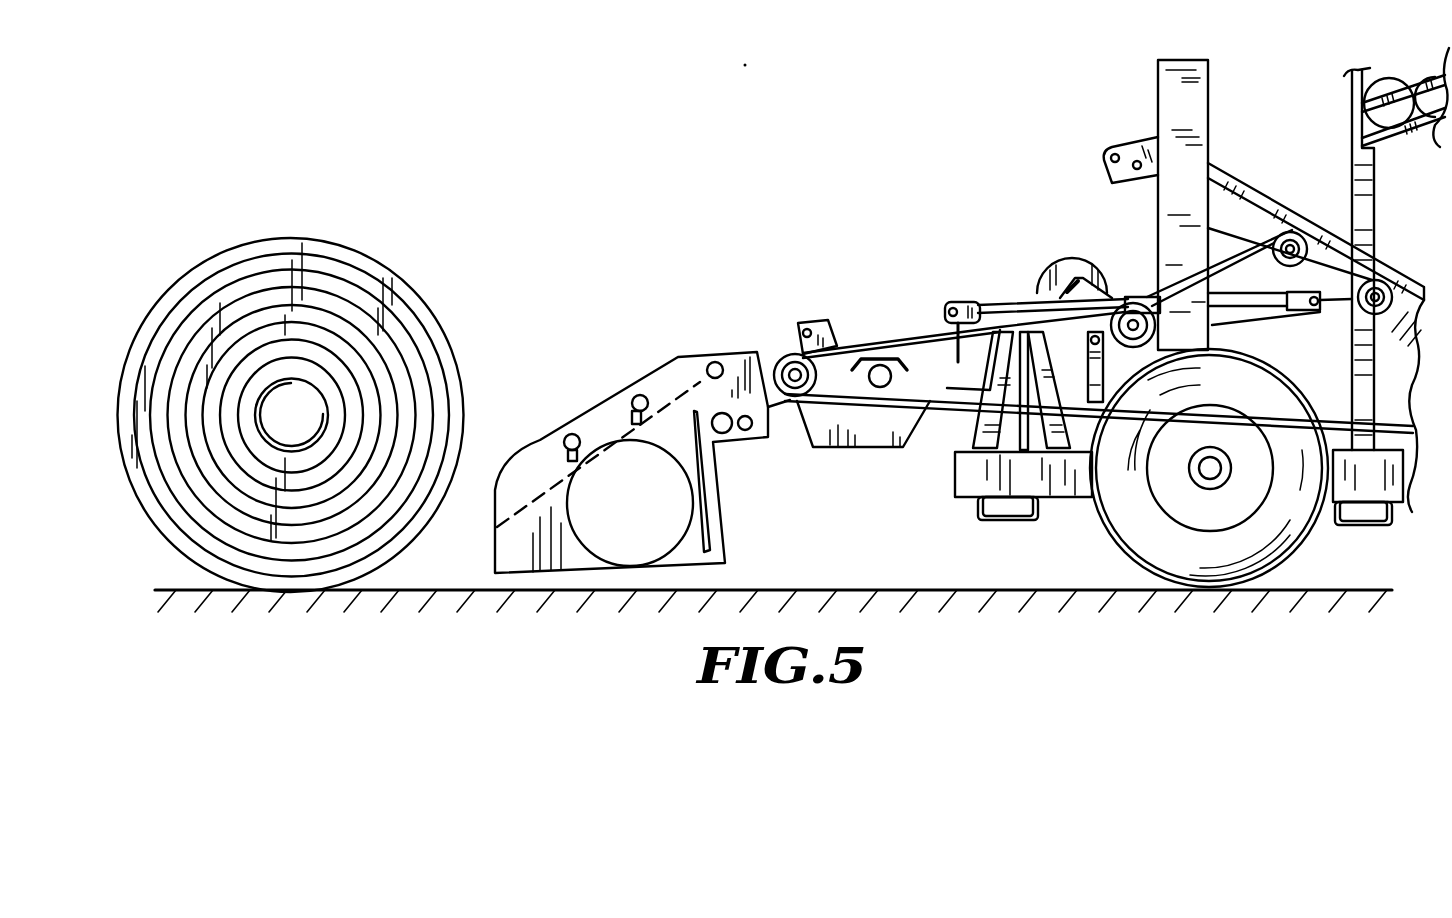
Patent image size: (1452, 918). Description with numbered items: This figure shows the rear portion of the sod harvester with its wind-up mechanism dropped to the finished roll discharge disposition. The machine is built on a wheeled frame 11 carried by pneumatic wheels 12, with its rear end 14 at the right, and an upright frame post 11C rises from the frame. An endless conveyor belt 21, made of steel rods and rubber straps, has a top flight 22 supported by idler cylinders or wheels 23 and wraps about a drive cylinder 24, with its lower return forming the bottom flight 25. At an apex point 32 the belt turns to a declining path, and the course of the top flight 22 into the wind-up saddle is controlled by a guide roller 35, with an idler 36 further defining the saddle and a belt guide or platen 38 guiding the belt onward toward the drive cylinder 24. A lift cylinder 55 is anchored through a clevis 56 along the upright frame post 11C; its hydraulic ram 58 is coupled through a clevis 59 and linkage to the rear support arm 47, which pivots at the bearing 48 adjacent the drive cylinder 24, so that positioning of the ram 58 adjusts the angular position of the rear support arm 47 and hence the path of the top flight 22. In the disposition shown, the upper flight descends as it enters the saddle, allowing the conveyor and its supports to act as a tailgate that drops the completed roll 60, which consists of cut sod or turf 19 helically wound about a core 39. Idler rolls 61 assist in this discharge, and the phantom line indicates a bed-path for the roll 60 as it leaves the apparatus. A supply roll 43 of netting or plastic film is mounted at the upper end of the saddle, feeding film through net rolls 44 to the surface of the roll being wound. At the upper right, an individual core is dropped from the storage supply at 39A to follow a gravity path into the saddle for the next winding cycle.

The completed roll 60 is at (358, 247).
The cut sod or turf 19 is at (424, 298).
The core 39 is at (296, 386).
The supply roll 43 is at (655, 513).
The idler rolls 61 is at (707, 363).
The net rolls 44 is at (726, 434).
The bearing 48 is at (796, 363).
The rear support arm 47 is at (822, 322).
The top flight 22 is at (924, 330).
The drive cylinder 24 is at (786, 404).
The bottom flight 25 is at (1298, 434).
The belt guide or platen 38 is at (886, 357).
The clevis 59 is at (973, 302).
The ram 58 is at (1017, 304).
The guide roller 35 is at (1067, 254).
The idler 36 is at (1147, 324).
The rear end 14 is at (966, 470).
The pneumatic wheels 12 is at (1108, 537).
The wheeled frame 11 is at (1367, 493).
The upright frame post 11C is at (1351, 163).
The idler cylinders or wheels 23 is at (1386, 336).
The lift cylinder 55 is at (1275, 307).
The clevis 56 is at (1320, 312).
The apex point 32 is at (1300, 234).
The endless conveyor belt 21 is at (1373, 276).
The individual core drop 39A is at (1383, 78).